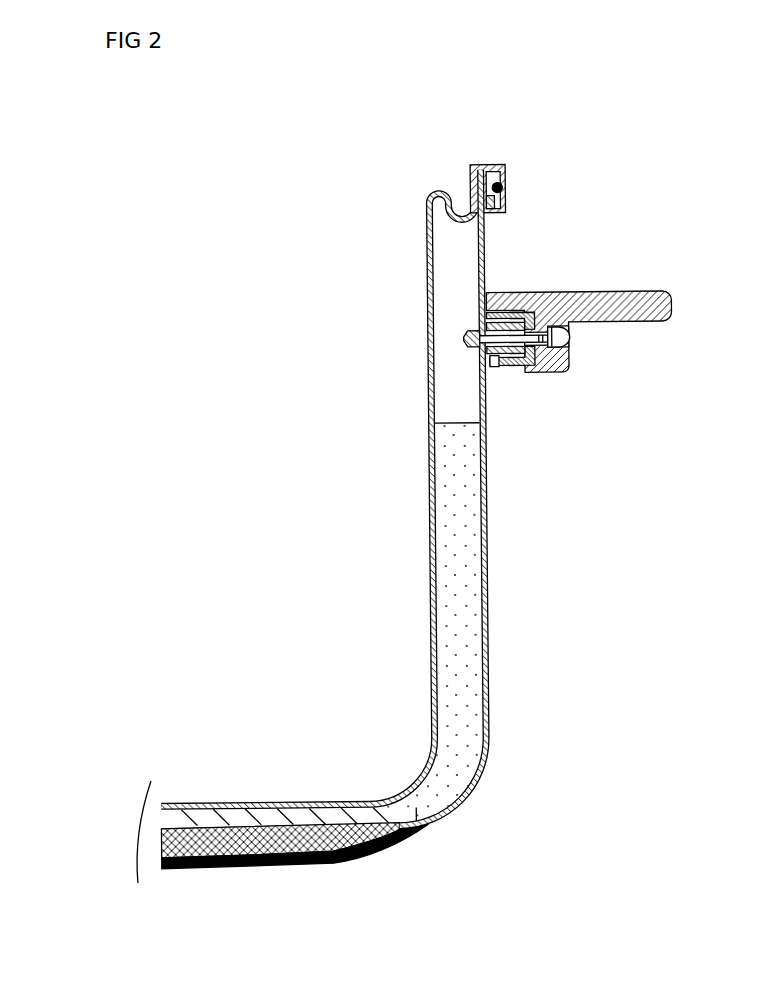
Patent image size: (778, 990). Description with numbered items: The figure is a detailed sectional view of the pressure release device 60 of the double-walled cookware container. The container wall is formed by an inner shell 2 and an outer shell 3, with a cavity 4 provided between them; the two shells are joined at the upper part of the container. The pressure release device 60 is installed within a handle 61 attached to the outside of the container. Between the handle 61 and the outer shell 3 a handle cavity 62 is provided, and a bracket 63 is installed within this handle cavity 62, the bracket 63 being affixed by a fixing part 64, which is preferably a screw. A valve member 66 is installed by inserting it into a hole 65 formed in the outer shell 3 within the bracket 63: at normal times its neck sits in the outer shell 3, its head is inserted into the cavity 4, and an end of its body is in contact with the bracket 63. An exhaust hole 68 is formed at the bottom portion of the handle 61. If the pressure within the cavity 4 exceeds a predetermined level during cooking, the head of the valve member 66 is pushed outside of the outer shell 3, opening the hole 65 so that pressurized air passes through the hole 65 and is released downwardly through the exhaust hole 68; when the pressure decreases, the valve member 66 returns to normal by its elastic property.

The inner shell 2 is at (430, 615).
The outer shell 3 is at (488, 612).
The cavity 4 is at (447, 407).
The pressure release device 60 is at (537, 307).
The handle 61 is at (607, 295).
The handle cavity 62 is at (537, 300).
The bracket 63 is at (537, 360).
The fixing part 64 is at (556, 341).
The hole 65 is at (483, 330).
The valve member 66 is at (460, 341).
The exhaust hole 68 is at (495, 370).